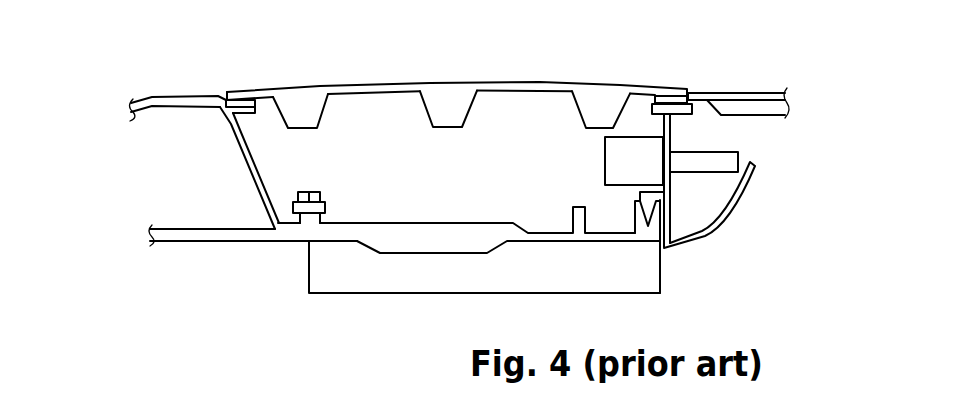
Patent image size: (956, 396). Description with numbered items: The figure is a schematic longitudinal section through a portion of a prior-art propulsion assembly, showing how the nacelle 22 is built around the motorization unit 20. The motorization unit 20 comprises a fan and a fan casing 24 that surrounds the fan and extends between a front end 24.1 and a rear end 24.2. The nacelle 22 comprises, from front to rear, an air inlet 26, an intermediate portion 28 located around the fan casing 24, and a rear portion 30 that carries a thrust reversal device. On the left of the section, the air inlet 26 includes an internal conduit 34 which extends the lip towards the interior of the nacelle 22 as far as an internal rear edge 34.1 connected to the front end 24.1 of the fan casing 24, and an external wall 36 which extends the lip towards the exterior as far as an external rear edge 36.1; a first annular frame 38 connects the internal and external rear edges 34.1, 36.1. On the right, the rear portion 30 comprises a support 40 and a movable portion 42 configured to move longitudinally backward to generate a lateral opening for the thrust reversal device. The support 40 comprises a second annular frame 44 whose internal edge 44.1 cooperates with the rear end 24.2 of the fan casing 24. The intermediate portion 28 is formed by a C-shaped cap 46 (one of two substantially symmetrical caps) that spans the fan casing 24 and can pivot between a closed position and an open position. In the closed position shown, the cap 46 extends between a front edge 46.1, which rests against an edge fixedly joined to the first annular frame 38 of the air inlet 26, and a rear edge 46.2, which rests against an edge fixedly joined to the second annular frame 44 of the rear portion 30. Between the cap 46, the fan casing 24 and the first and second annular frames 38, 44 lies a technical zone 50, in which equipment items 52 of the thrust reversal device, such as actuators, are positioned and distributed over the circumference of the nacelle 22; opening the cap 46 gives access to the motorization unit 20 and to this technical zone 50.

The motorization unit 20 is at (672, 288).
The nacelle 22 is at (214, 71).
The fan casing 24 is at (436, 265).
The front end 24.1 is at (316, 231).
The rear end 24.2 is at (660, 250).
The air inlet 26 is at (127, 92).
The intermediate portion 28 is at (554, 75).
The rear portion 30 is at (764, 80).
The internal conduit 34 is at (164, 238).
The internal rear edge 34.1 is at (285, 232).
The external wall 36 is at (142, 114).
The external rear edge 36.1 is at (216, 96).
The first annular frame 38 is at (247, 170).
The support 40 is at (670, 121).
The movable portion 42 is at (777, 105).
The second annular frame 44 is at (663, 153).
The internal edge 44.1 is at (668, 210).
The cap 46 is at (408, 77).
The front edge 46.1 is at (245, 90).
The rear edge 46.2 is at (673, 97).
The technical zone 50 is at (465, 175).
The equipment item 52 is at (620, 137).